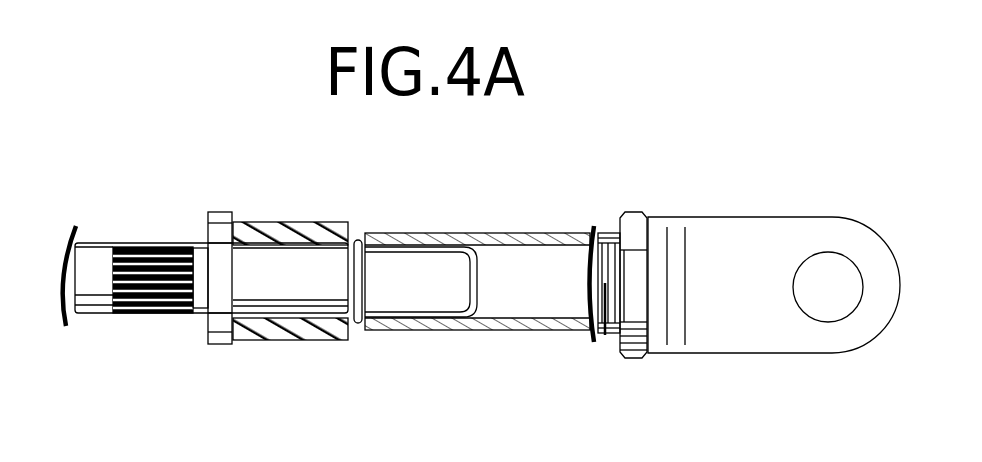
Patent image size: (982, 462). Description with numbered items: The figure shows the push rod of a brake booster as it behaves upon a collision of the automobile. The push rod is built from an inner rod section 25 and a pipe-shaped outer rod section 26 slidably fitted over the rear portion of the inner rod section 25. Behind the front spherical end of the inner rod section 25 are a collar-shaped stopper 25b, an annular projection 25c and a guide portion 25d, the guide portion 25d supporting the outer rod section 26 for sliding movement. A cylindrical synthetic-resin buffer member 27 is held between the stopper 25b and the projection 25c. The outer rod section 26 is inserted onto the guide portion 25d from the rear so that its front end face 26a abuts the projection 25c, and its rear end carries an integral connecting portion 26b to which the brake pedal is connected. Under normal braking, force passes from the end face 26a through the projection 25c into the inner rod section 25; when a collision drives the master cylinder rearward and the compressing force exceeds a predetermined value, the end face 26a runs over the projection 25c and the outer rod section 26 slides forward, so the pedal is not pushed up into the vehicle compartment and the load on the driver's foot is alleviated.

The inner rod section 25 is at (100, 242).
The collar-shaped stopper 25b is at (220, 222).
The annular projection 25c is at (358, 238).
The guide portion 25d is at (445, 268).
The outer rod section 26 is at (508, 332).
The front end face 26a is at (357, 325).
The connecting portion 26b is at (743, 335).
The buffer member 27 is at (282, 330).